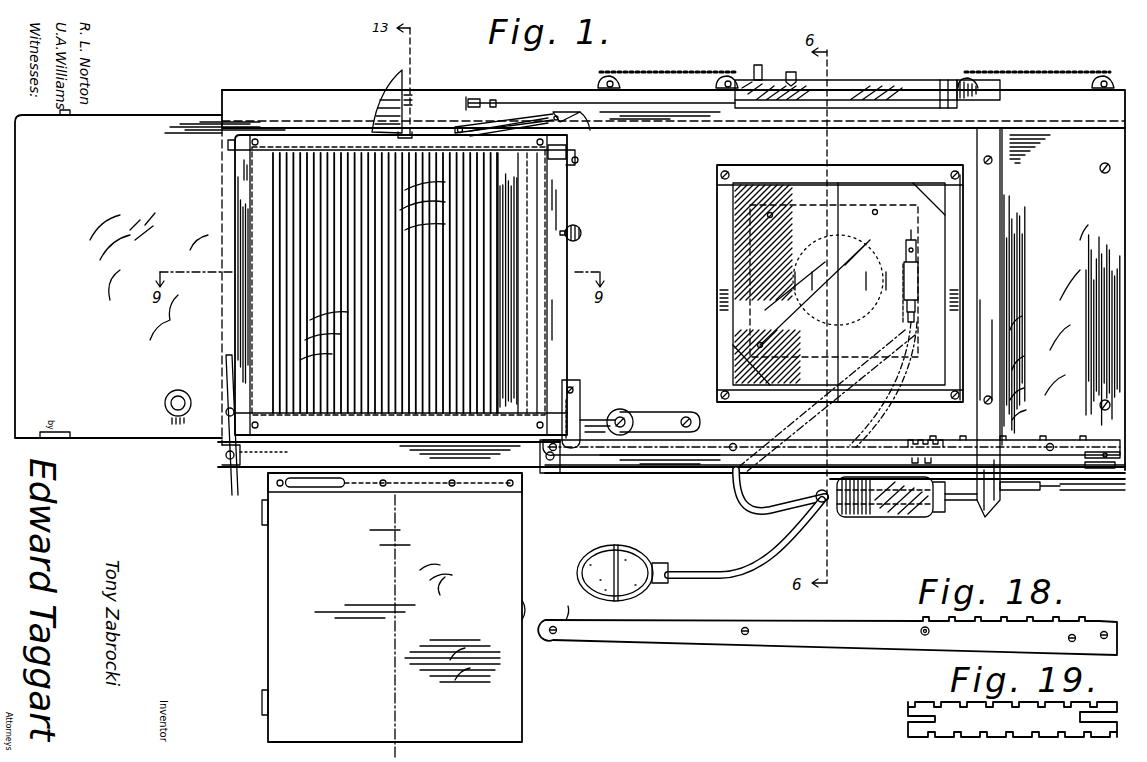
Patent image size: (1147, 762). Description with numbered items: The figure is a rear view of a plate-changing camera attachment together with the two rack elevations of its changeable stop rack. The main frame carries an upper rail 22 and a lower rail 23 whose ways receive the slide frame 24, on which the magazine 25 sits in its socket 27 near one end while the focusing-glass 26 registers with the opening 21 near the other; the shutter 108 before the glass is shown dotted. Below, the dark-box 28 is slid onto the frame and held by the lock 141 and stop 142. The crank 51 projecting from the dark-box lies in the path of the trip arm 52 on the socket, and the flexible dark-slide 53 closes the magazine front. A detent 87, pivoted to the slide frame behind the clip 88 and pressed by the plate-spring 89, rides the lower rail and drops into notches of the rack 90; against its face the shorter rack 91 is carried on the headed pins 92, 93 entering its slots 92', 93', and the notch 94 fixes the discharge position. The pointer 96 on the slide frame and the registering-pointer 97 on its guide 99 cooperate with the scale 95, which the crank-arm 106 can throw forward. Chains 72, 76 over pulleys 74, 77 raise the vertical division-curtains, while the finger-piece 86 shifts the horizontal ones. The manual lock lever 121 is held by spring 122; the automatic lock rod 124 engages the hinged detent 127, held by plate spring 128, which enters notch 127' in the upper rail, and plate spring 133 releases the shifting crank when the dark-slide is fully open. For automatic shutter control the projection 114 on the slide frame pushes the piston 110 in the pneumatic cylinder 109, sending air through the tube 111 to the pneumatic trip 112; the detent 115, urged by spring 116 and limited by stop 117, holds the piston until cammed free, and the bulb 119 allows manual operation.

In FIG. 1, the upper rail 22 is at (1130, 104).
In FIG. 1, the slide frame 24 is at (168, 108).
In FIG. 1, the magazine 25 is at (258, 203).
In FIG. 1, the flexible dark-slide 53 is at (250, 254).
In FIG. 1, the trip arm 52 is at (226, 482).
In FIG. 1, the crank 51 is at (300, 490).
In FIG. 1, the dark-box 28 is at (268, 548).
In FIG. 1, the lock 141 is at (270, 458).
In FIG. 1, the stop 142 is at (538, 473).
In FIG. 1, the lower rail 23 is at (634, 466).
In FIG. 1, the rack 90 is at (705, 456).
In FIG. 18, the rack 90 is at (796, 640).
In FIG. 1, the headed pin 93 is at (925, 442).
In FIG. 18, the headed pin 93 is at (917, 653).
In FIG. 1, the slot 93' is at (825, 401).
In FIG. 1, the pointer 96 is at (400, 80).
In FIG. 1, the spring 122 is at (418, 120).
In FIG. 1, the lever 121 is at (462, 126).
In FIG. 1, the plate spring 128 is at (508, 122).
In FIG. 1, the detent 127 is at (565, 92).
In FIG. 1, the notch 127' is at (605, 125).
In FIG. 1, the crank-arm 106 is at (680, 106).
In FIG. 1, the vertical rod 124 is at (568, 152).
In FIG. 1, the plate spring 133 is at (576, 163).
In FIG. 1, the chain 72 is at (662, 70).
In FIG. 1, the pulleys 74 is at (614, 76).
In FIG. 1, the finger-piece 86 is at (758, 64).
In FIG. 1, the registering-pointer 97 is at (790, 72).
In FIG. 1, the indicator scale 95 is at (920, 82).
In FIG. 1, the guide 99 is at (1000, 88).
In FIG. 1, the pulleys 77 is at (975, 76).
In FIG. 1, the chain 76 is at (1040, 70).
In FIG. 1, the socket 27 is at (1130, 266).
In FIG. 1, the opening 21 is at (800, 180).
In FIG. 1, the focusing-glass 26 is at (745, 248).
In FIG. 1, the shutter 108 is at (795, 290).
In FIG. 1, the pneumatic trip 112 is at (918, 280).
In FIG. 1, the clip 88 is at (582, 404).
In FIG. 1, the plate-spring 89 is at (626, 410).
In FIG. 1, the detent 87 is at (668, 420).
In FIG. 1, the projection 114 is at (998, 510).
In FIG. 1, the piston 110 is at (862, 518).
In FIG. 1, the pneumatic cylinder 109 is at (928, 518).
In FIG. 1, the spring 116 is at (964, 505).
In FIG. 1, the detent 115 is at (1038, 486).
In FIG. 1, the stop 117 is at (1105, 470).
In FIG. 1, the headed pin 92 is at (1103, 458).
In FIG. 1, the slot 92' is at (1086, 504).
In FIG. 1, the tube 111 is at (740, 505).
In FIG. 1, the bulb 119 is at (615, 546).
In FIG. 18, the notch 94 is at (569, 606).
In FIG. 19, the shorter rack 91 is at (950, 737).